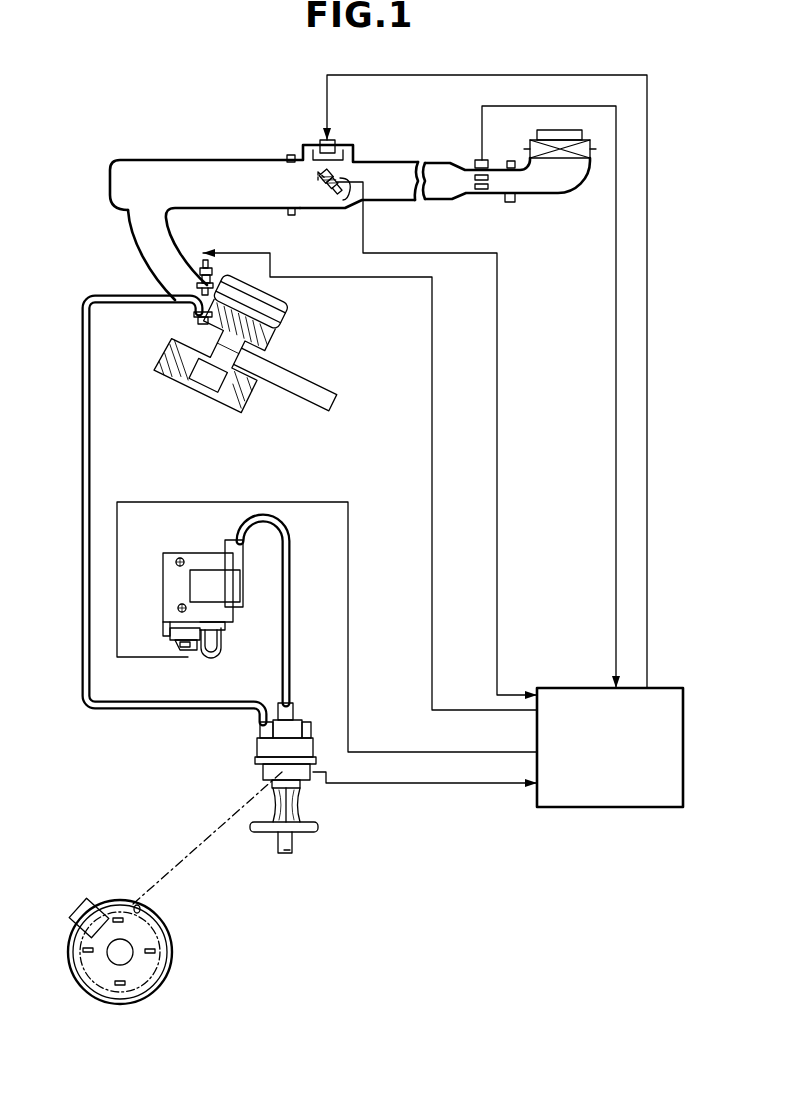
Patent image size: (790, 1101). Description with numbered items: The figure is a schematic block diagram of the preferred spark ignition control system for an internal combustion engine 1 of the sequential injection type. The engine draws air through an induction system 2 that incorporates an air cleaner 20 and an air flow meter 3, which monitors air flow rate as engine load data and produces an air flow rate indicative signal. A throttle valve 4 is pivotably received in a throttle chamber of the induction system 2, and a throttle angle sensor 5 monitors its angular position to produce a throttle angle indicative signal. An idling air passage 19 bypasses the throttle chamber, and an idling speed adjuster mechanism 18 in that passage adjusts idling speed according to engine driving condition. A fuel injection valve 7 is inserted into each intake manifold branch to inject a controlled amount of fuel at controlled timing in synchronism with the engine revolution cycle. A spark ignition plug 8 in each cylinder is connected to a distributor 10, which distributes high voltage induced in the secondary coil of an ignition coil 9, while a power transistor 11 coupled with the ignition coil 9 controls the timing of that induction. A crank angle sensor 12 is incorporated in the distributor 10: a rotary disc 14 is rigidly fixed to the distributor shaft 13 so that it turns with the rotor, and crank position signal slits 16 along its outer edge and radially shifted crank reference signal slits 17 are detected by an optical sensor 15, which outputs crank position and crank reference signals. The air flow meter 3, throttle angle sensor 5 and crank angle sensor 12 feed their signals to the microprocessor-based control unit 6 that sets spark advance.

The internal combustion engine 1 is at (290, 326).
The induction system 2 is at (133, 245).
The air flow meter 3 is at (480, 190).
The throttle valve 4 is at (322, 186).
The throttle angle sensor 5 is at (343, 195).
The control unit 6 is at (668, 688).
The fuel injection valve 7 is at (222, 262).
The spark ignition plug 8 is at (194, 325).
The ignition coil 9 is at (190, 553).
The distributor 10 is at (257, 752).
The power transistor 11 is at (205, 660).
The crank angle sensor 12 is at (121, 878).
The distributor shaft 13 is at (293, 843).
The rotary disc 14 is at (70, 970).
The optical sensor 15 is at (75, 905).
The crank position signal slits 16 is at (138, 903).
The crank reference signal slits 17 is at (155, 950).
The idling speed adjuster mechanism 18 is at (320, 140).
The idling air passage 19 is at (299, 154).
The air cleaner 20 is at (565, 130).